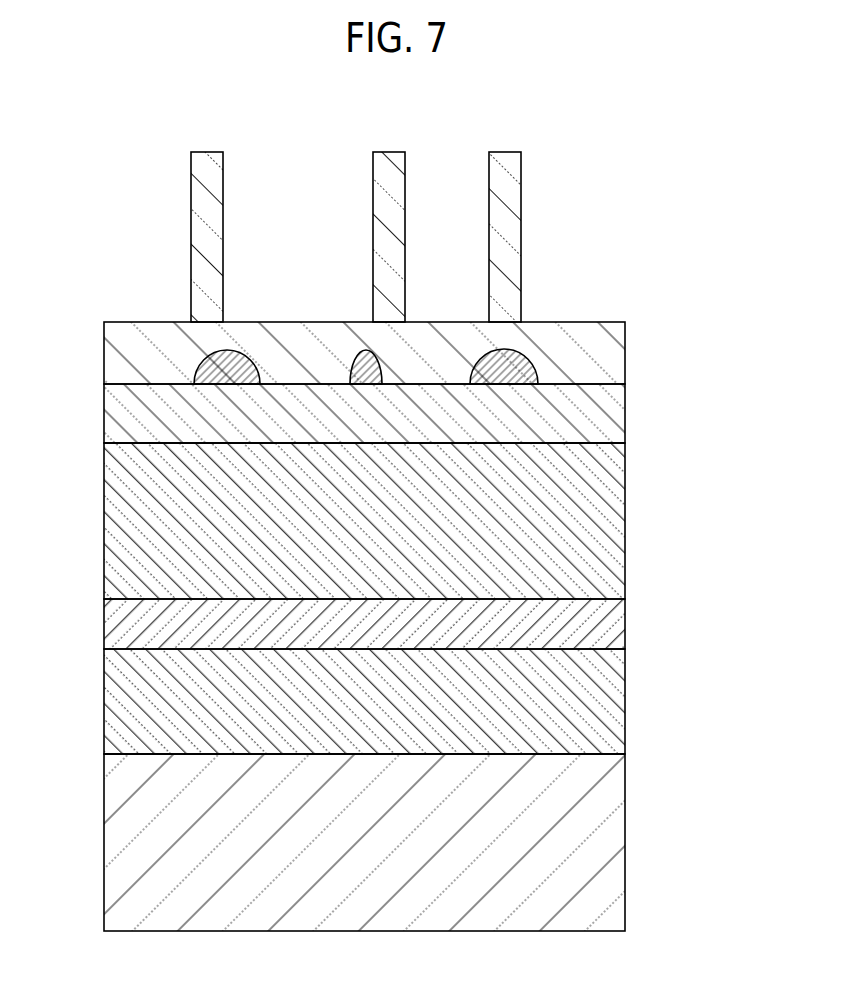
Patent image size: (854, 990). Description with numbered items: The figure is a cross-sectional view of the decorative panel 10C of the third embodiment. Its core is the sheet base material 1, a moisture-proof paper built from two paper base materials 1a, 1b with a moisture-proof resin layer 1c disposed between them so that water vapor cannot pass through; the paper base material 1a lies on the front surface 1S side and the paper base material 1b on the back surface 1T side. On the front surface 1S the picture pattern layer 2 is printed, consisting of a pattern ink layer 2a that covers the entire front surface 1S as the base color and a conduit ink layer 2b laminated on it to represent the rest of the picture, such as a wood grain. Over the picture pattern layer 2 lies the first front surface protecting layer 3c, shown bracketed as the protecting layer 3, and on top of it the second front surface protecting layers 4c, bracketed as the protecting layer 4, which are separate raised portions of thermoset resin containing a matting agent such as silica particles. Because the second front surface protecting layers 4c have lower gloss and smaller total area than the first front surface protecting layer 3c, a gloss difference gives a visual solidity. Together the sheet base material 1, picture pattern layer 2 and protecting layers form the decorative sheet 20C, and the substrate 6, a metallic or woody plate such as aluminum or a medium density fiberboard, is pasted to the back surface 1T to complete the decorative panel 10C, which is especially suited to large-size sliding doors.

The decorative panel 10C is at (110, 193).
The decorative sheet 20C is at (710, 185).
The electrode layer 4 is at (676, 185).
The second front surface protecting layer 4c is at (216, 212).
The intermediate layer 3 is at (676, 293).
The first front surface protecting layer 3c is at (619, 341).
The picture pattern layer 2 is at (676, 345).
The pattern ink layer 2a is at (618, 418).
The conduit ink layer 2b is at (528, 359).
The sheet base material 1 is at (678, 525).
The paper base material 1a is at (620, 546).
The paper base material 1b is at (620, 697).
The moisture-proof resin layer 1c is at (620, 623).
The front surface 1S is at (123, 443).
The back surface 1T is at (118, 754).
The substrate 6 is at (625, 829).